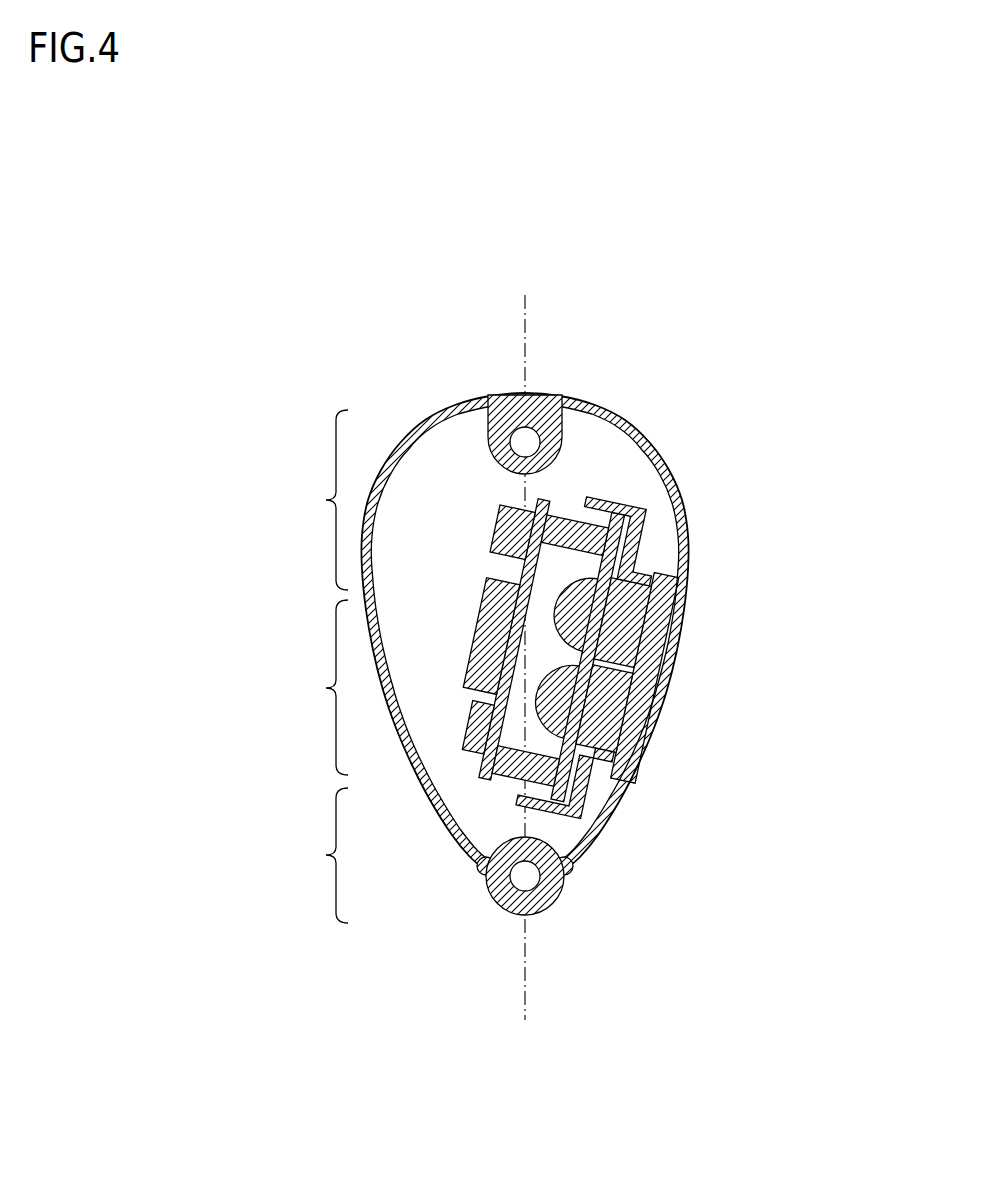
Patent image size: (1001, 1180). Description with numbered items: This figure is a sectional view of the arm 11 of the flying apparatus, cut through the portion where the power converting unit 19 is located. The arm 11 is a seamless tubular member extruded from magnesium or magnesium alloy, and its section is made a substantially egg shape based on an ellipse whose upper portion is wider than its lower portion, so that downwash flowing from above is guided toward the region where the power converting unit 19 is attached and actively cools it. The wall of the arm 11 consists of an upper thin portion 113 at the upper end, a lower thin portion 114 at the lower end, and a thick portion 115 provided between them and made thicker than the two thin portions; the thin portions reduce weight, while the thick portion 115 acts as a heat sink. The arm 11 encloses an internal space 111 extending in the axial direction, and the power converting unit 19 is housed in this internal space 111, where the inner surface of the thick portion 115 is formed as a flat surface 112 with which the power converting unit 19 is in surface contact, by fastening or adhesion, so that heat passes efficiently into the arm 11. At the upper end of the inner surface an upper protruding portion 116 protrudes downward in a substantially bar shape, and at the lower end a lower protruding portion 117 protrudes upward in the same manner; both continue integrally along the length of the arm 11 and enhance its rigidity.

The arm 11 is at (464, 348).
The internal space 111 is at (605, 455).
The flat surface 112 is at (388, 658).
The upper thin portion 113 is at (312, 500).
The lower thin portion 114 is at (312, 855).
The thick portion 115 is at (312, 687).
The upper protruding portion 116 is at (486, 432).
The lower protruding portion 117 is at (478, 875).
The power converting unit 19 is at (621, 503).